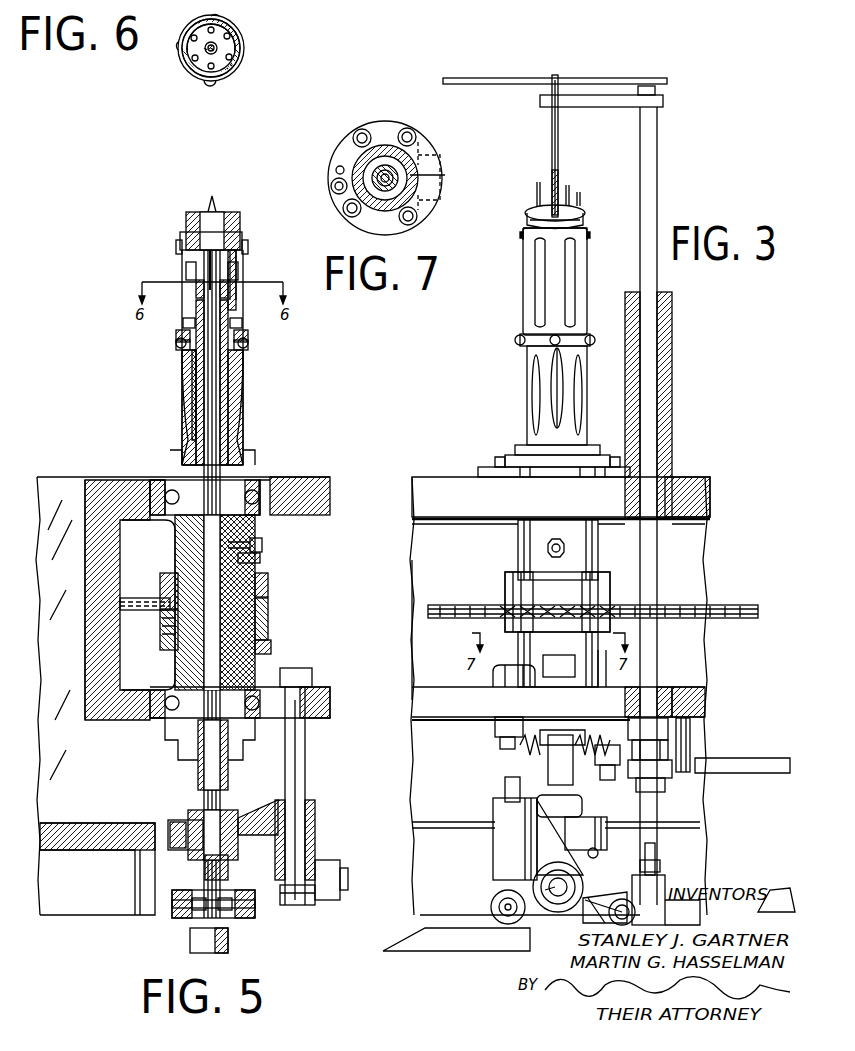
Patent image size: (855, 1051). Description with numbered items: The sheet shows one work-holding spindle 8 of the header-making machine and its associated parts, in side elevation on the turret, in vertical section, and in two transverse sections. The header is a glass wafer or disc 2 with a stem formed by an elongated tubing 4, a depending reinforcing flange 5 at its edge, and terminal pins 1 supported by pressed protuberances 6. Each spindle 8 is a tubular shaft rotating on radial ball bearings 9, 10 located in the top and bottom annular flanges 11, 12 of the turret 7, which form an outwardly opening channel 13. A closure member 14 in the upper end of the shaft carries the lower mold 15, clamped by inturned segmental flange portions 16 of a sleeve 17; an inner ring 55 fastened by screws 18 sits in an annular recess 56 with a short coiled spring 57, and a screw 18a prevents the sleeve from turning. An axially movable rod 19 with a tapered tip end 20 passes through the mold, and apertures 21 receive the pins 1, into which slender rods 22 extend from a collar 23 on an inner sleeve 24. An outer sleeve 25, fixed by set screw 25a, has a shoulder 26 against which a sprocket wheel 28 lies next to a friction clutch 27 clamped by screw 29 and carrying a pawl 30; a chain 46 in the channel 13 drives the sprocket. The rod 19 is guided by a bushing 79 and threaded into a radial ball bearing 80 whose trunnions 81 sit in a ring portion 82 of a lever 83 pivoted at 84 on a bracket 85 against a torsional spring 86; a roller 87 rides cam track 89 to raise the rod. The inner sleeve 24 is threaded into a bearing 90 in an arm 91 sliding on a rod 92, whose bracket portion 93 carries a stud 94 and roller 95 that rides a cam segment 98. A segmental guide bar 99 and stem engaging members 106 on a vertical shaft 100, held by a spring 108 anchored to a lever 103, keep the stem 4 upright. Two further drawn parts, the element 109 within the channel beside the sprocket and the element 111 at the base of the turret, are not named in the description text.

In FIG. 3, the pins 1 is at (572, 192).
In FIG. 3, the glass wafer or disc 2 is at (580, 202).
In FIG. 3, the tubing 4 is at (552, 160).
In FIG. 3, the reinforcing flange 5 is at (585, 220).
In FIG. 3, the protuberances 6 is at (537, 200).
In FIG. 5, the turret 7 is at (40, 530).
In FIG. 3, the turret 7 is at (445, 478).
In FIG. 6, the spindle 8 is at (238, 30).
In FIG. 7, the spindle 8 is at (404, 190).
In FIG. 5, the spindle 8 is at (243, 425).
In FIG. 3, the spindle 8 is at (527, 370).
In FIG. 5, the radial ball bearing 9 is at (318, 466).
In FIG. 5, the radial ball bearing 10 is at (165, 730).
In FIG. 5, the top annular flange 11 is at (330, 496).
In FIG. 3, the top annular flange 11 is at (412, 510).
In FIG. 5, the bottom annular flange 12 is at (320, 685).
In FIG. 3, the bottom annular flange 12 is at (420, 722).
In FIG. 5, the channel 13 is at (120, 625).
In FIG. 3, the channel 13 is at (440, 646).
In FIG. 5, the closure member 14 is at (238, 262).
In FIG. 5, the lower mold 15 is at (240, 222).
In FIG. 3, the lower mold 15 is at (521, 232).
In FIG. 5, the inturned segmental flange portions 16 is at (248, 245).
In FIG. 6, the sleeve 17 is at (237, 72).
In FIG. 5, the sleeve 17 is at (244, 268).
In FIG. 3, the sleeve 17 is at (523, 258).
In FIG. 6, the screws 18 is at (240, 58).
In FIG. 5, the screws 18 is at (248, 345).
In FIG. 3, the screws 18 is at (518, 340).
In FIG. 5, the screw 18a is at (183, 322).
In FIG. 6, the rod 19 is at (182, 60).
In FIG. 7, the rod 19 is at (411, 132).
In FIG. 5, the rod 19 is at (200, 395).
In FIG. 5, the tip end 20 is at (216, 205).
In FIG. 3, the tip end 20 is at (558, 185).
In FIG. 5, the apertures 21 is at (204, 212).
In FIG. 6, the slender rods 22 is at (244, 42).
In FIG. 5, the slender rods 22 is at (186, 270).
In FIG. 6, the collar 23 is at (215, 56).
In FIG. 5, the collar 23 is at (228, 290).
In FIG. 7, the sleeve 24 is at (385, 165).
In FIG. 5, the sleeve 24 is at (228, 370).
In FIG. 3, the sleeve 24 is at (548, 765).
In FIG. 7, the outer sleeve 25 is at (430, 215).
In FIG. 5, the outer sleeve 25 is at (175, 540).
In FIG. 3, the outer sleeve 25 is at (528, 545).
In FIG. 5, the set screw 25a is at (262, 545).
In FIG. 3, the set screw 25a is at (548, 550).
In FIG. 5, the shoulder 26 is at (260, 560).
In FIG. 3, the shoulder 26 is at (600, 580).
In FIG. 7, the friction clutch 27 is at (420, 145).
In FIG. 5, the friction clutch 27 is at (268, 630).
In FIG. 3, the friction clutch 27 is at (606, 672).
In FIG. 5, the sprocket wheel 28 is at (268, 580).
In FIG. 3, the sprocket wheel 28 is at (525, 595).
In FIG. 7, the screw 29 is at (440, 170).
In FIG. 7, the pawl 30 is at (330, 190).
In FIG. 3, the pawl 30 is at (566, 648).
In FIG. 5, the chain 46 is at (118, 600).
In FIG. 3, the chain 46 is at (730, 605).
In FIG. 5, the inner ring 55 is at (192, 360).
In FIG. 5, the annular recess 56 is at (248, 333).
In FIG. 5, the coiled spring 57 is at (178, 345).
In FIG. 5, the bushing 79 is at (205, 868).
In FIG. 5, the radial ball bearing 80 is at (222, 912).
In FIG. 5, the trunnions 81 is at (250, 908).
In FIG. 5, the ring portion 82 is at (255, 902).
In FIG. 3, the ring portion 82 is at (612, 904).
In FIG. 3, the lever 83 is at (612, 890).
In FIG. 3, the pivot 84 is at (600, 825).
In FIG. 3, the bracket 85 is at (650, 875).
In FIG. 3, the torsional spring 86 is at (700, 905).
In FIG. 3, the roller 87 is at (492, 900).
In FIG. 5, the segmental cam track 89 is at (190, 940).
In FIG. 3, the segmental cam track 89 is at (400, 940).
In FIG. 5, the radial ball bearing 90 is at (190, 830).
In FIG. 5, the arm 91 is at (252, 790).
In FIG. 5, the rod 92 is at (305, 765).
In FIG. 3, the rod 92 is at (505, 785).
In FIG. 3, the bracket portion 93 is at (496, 840).
In FIG. 5, the stud 94 is at (356, 876).
In FIG. 3, the stud 94 is at (545, 888).
In FIG. 5, the roller 95 is at (318, 840).
In FIG. 3, the roller 95 is at (540, 880).
In FIG. 5, the cam track segment 98 is at (315, 900).
In FIG. 3, the cam track segment 98 is at (770, 890).
In FIG. 3, the segmental guide bar 99 is at (530, 84).
In FIG. 3, the vertical shaft 100 is at (660, 205).
In FIG. 3, the lever 103 is at (668, 735).
In FIG. 3, the stem engaging member 106 is at (620, 107).
In FIG. 3, the spring 108 is at (590, 755).
In FIG. 5, the gear 109 is at (160, 640).
In FIG. 3, the base plate 111 is at (412, 812).